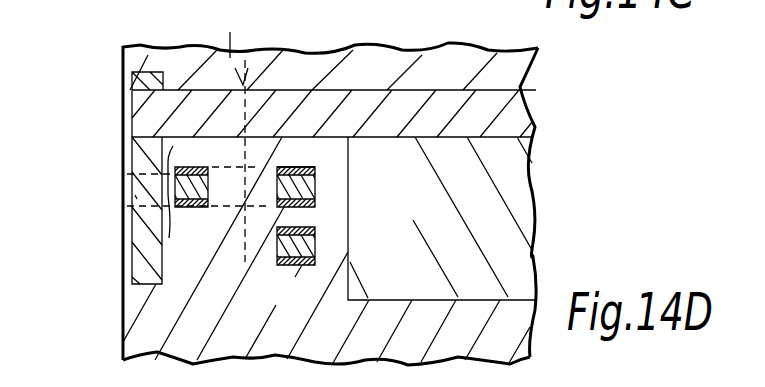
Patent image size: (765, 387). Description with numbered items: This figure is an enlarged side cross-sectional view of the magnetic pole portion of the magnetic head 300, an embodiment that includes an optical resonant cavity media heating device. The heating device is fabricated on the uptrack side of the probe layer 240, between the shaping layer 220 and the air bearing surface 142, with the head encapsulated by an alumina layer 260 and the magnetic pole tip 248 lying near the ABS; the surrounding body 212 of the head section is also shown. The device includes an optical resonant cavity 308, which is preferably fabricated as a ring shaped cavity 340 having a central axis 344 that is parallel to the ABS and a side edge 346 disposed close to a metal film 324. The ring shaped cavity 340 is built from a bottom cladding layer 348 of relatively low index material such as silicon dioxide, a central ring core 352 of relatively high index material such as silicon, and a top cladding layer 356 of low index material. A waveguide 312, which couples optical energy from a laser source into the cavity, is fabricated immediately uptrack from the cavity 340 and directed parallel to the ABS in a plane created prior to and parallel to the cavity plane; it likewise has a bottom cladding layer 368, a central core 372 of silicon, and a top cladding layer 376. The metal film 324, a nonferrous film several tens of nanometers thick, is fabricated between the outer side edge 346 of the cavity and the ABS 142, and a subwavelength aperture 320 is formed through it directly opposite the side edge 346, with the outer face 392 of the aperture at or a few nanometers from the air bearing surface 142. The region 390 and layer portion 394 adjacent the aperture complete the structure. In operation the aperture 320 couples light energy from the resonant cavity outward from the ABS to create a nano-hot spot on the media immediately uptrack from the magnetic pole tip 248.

The magnetic head 300 is at (171, 43).
The air bearing surface 142 is at (123, 63).
The magnetic pole tip 248 is at (132, 107).
The probe layer 240 is at (523, 108).
The alumina layer 260 is at (462, 81).
The shaping layer 220 is at (508, 186).
The base body 212 is at (527, 340).
The subwavelength aperture 320 is at (123, 188).
The outer face of the subwavelength aperture 392 is at (137, 197).
The metal film 324 is at (140, 245).
The central axis 344 is at (198, 134).
The ring shaped cavity 340 is at (302, 167).
The optical resonant cavity 308 is at (302, 167).
The upper layer of left spacer 394 is at (195, 173).
The side edge 346 is at (191, 208).
The gap line 390 is at (194, 207).
The top cladding layer 356 is at (317, 168).
The central ring core 352 is at (315, 183).
The bottom cladding layer 348 is at (315, 203).
The top cladding layer 376 is at (317, 228).
The central core 372 is at (317, 246).
The bottom cladding layer 368 is at (317, 263).
The waveguide 312 is at (304, 270).